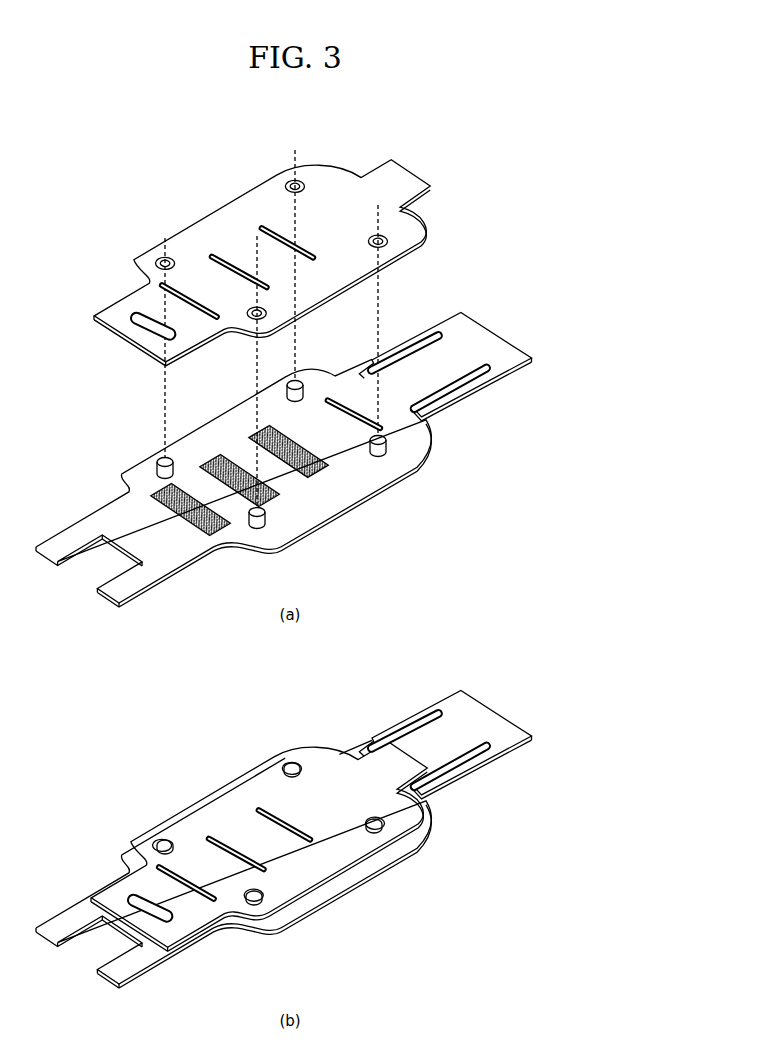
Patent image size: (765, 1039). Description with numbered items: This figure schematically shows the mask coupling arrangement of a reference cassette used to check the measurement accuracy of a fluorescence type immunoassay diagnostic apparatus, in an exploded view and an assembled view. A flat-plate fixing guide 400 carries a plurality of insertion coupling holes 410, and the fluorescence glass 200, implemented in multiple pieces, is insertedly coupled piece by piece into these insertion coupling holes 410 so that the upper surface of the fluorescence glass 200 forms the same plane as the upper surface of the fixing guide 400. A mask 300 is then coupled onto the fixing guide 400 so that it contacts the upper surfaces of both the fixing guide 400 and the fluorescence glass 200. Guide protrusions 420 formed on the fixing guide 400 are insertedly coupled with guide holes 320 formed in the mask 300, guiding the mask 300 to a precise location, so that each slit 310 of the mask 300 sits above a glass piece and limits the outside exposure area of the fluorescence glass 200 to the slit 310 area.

The fluorescence glass 200 is at (280, 492).
The mask 300 is at (395, 175).
The slits 310 is at (216, 255).
The guide holes 320 is at (292, 180).
The fixing guide 400 is at (490, 333).
The insertion coupling holes 410 is at (268, 524).
The guide protrusions 420 is at (392, 450).